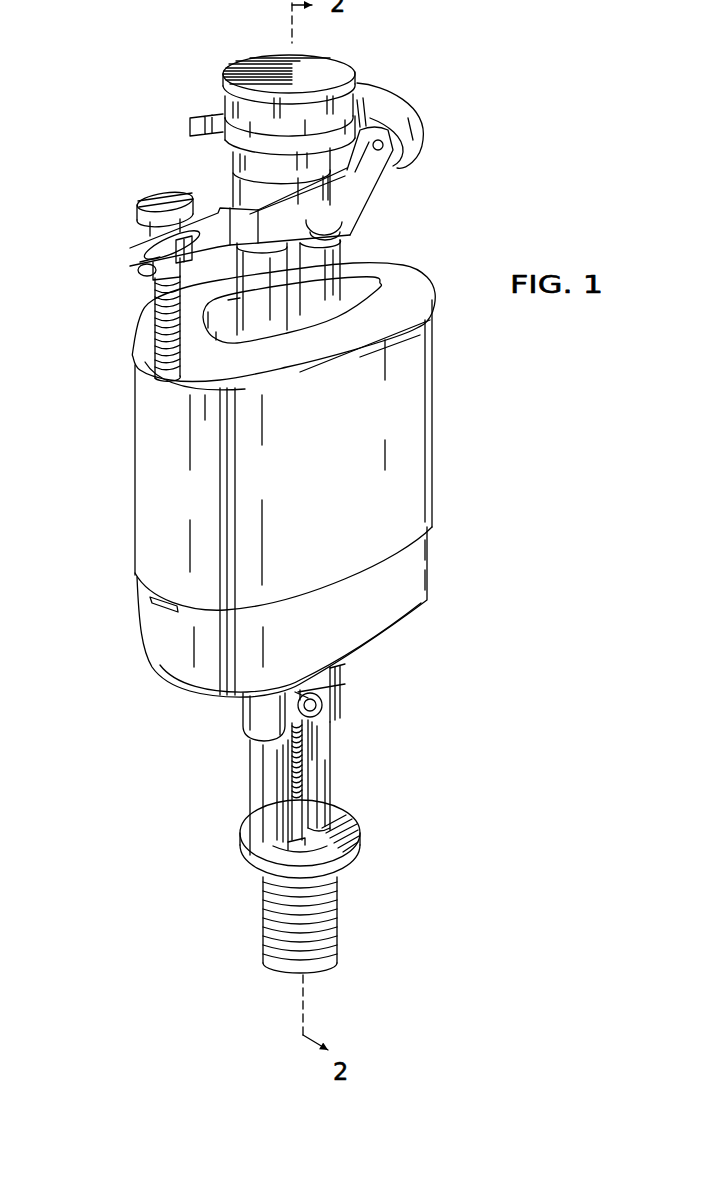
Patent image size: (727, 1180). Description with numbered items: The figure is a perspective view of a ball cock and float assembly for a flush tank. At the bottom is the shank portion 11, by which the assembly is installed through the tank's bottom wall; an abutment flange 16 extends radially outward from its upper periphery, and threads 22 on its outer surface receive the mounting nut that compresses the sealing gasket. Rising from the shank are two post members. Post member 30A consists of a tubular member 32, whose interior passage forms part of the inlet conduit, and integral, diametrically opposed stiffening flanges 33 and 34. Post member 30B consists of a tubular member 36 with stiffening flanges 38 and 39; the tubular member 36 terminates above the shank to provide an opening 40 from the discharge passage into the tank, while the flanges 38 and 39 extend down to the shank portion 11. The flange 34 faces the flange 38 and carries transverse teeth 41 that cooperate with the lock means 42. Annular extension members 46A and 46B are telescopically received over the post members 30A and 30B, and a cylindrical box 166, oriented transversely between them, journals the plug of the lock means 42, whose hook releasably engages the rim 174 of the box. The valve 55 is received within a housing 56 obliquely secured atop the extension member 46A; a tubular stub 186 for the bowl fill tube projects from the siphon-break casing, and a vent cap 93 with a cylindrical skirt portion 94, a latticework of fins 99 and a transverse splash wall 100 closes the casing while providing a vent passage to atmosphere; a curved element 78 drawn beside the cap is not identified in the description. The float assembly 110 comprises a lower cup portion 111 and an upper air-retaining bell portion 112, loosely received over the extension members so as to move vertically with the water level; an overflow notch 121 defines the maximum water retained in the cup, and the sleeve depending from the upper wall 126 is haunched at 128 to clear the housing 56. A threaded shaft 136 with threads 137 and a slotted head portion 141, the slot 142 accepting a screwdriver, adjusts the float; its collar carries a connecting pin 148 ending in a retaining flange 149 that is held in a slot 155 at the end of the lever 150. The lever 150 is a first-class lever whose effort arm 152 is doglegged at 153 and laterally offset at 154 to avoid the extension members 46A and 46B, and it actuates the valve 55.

The float assembly 110 is at (480, 432).
The bell portion 112 is at (433, 380).
The cup portion 111 is at (433, 580).
The haunch 128 is at (428, 305).
The upper wall 126 is at (215, 357).
The overflow notch 121 is at (152, 603).
The vent cap 93 is at (345, 52).
The splash wall 100 is at (245, 65).
The fins 99 is at (243, 92).
The tubular stub 186 is at (195, 122).
The cam bracket 78 is at (407, 106).
The skirt portion 94 is at (372, 118).
The dogleg 153 is at (395, 155).
The valve 55 is at (392, 186).
The housing 56 is at (373, 198).
The lateral offset 154 is at (245, 218).
The lever 150 is at (348, 202).
The effort arm 152 is at (350, 252).
The head portion 141 is at (140, 212).
The slot 142 is at (165, 192).
The connecting pin 148 is at (150, 250).
The slot 155 is at (173, 258).
The threaded shaft 136 is at (148, 278).
The retaining flange 149 is at (165, 290).
The threads 137 is at (135, 348).
The cylindrical box 166 is at (302, 688).
The rim 174 is at (356, 668).
The extension member 46A is at (324, 690).
The extension member 46B is at (242, 718).
The lock means 42 is at (323, 706).
The post member 30A is at (342, 755).
The post member 30B is at (250, 750).
The tubular member 32 is at (325, 735).
The stiffening flange 34 is at (312, 785).
The stiffening flange 33 is at (332, 795).
The teeth 41 is at (332, 820).
The stiffening flange 39 is at (255, 765).
The tubular member 36 is at (276, 782).
The stiffening flange 38 is at (289, 805).
The opening 40 is at (272, 830).
The abutment flange 16 is at (355, 872).
The threads 22 is at (337, 925).
The shank portion 11 is at (262, 918).